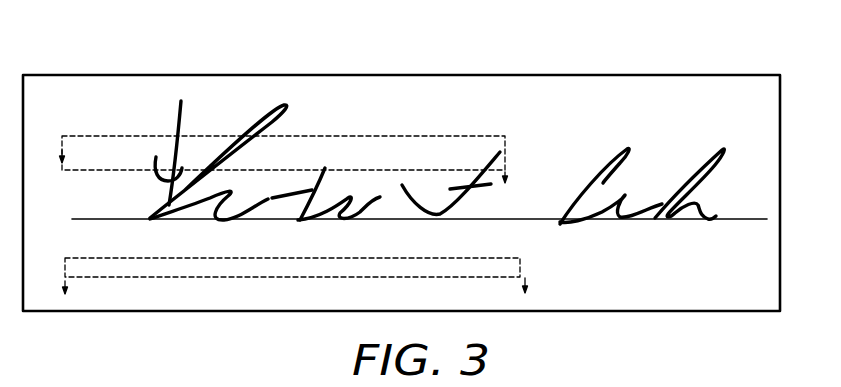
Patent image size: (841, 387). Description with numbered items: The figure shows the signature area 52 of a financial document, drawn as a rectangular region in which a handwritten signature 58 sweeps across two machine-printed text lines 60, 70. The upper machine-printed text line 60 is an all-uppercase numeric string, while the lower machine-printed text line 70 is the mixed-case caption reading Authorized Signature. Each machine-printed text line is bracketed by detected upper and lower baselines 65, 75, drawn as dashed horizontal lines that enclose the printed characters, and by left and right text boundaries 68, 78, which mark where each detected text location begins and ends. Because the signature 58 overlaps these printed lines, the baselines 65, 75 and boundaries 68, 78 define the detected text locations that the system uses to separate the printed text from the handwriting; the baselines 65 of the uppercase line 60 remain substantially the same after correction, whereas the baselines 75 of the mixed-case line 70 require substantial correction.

The signature area 52 is at (652, 75).
The signature 58 is at (256, 118).
The machine-printed text line 60 is at (375, 136).
The upper and lower baselines 65 is at (462, 136).
The left and right text boundaries 68 is at (62, 141).
The machine-printed text line 70 is at (196, 268).
The upper and lower baselines 75 is at (520, 260).
The left and right text boundaries 78 is at (64, 262).